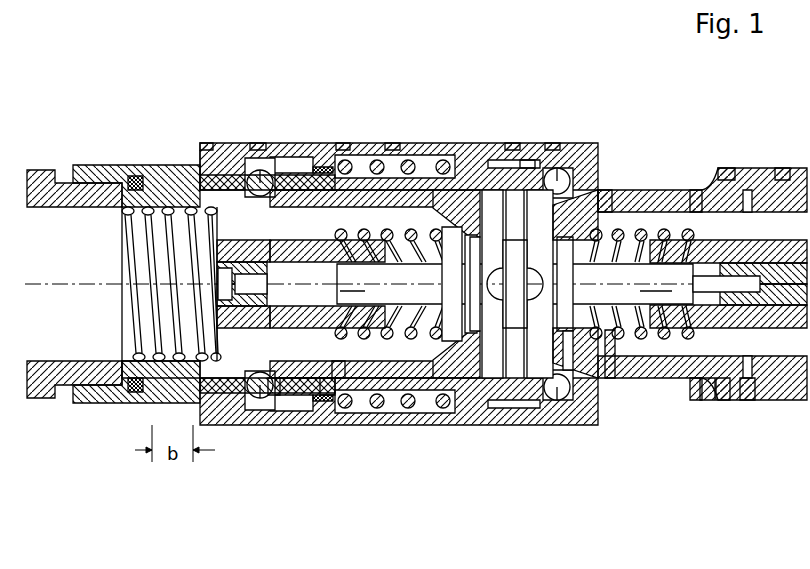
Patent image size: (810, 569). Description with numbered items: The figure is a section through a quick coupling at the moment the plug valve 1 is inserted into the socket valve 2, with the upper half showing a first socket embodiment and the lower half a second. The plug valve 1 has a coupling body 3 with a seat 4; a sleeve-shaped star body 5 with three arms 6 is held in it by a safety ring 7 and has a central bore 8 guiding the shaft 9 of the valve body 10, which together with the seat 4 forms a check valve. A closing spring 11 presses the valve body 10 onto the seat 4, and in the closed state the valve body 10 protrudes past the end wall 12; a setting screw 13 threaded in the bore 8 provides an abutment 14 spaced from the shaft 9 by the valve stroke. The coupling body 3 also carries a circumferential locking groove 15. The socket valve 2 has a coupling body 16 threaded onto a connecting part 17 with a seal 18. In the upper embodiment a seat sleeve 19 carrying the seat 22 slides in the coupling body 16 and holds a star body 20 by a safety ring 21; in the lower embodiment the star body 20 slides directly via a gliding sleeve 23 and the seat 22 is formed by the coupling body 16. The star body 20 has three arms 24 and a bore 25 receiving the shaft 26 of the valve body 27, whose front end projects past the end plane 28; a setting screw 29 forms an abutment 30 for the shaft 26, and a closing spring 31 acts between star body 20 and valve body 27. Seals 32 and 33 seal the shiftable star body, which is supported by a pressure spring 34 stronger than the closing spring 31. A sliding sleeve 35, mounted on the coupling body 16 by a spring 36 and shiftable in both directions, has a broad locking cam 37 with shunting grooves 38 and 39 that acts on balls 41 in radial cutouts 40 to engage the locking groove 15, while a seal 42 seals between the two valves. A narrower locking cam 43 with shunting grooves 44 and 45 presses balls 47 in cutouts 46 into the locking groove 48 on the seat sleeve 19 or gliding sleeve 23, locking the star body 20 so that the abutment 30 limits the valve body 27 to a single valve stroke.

The plug valve 1 is at (672, 378).
The socket valve 2 is at (143, 403).
The coupling body 3 is at (710, 400).
The seat 4 is at (573, 425).
The star body 5 is at (740, 400).
The arms 6 is at (725, 168).
The safety ring 7 is at (750, 170).
The bore 8 is at (695, 190).
The shaft 9 is at (633, 192).
The valve body 10 is at (612, 188).
The closing spring 11 is at (612, 378).
The end wall 12 is at (537, 425).
The setting screw 13 is at (783, 168).
The abutment 14 is at (718, 400).
The locking groove 15 is at (630, 378).
The coupling body 16 is at (365, 425).
The connecting part 17 is at (33, 398).
The seal 18 is at (130, 403).
The seat sleeve 19 is at (432, 143).
The star body 20 is at (315, 143).
The safety ring 21 is at (293, 143).
The seat 22 is at (473, 143).
The gliding sleeve 23 is at (325, 425).
The arms 24 is at (360, 143).
The bore 25 is at (338, 425).
The shaft 26 is at (417, 425).
The valve body 27 is at (450, 425).
The end plane 28 is at (490, 425).
The setting screw 29 is at (213, 143).
The abutment 30 is at (392, 143).
The closing spring 31 is at (403, 425).
The seal 32 is at (198, 160).
The seal 33 is at (330, 143).
The pressure spring 34 is at (160, 400).
The sliding sleeve 35 is at (343, 143).
The spring 36 is at (413, 143).
The locking cam 37 is at (553, 143).
The shunting groove 38 is at (525, 143).
The shunting groove 39 is at (597, 143).
The radial cutouts 40 is at (567, 400).
The balls 41 is at (568, 143).
The seal 42 is at (512, 143).
The locking cam 43 is at (258, 143).
The shunting groove 44 is at (213, 143).
The shunting groove 45 is at (278, 143).
The cutouts 46 is at (272, 425).
The balls 47 is at (258, 400).
The locking groove 48 is at (263, 143).